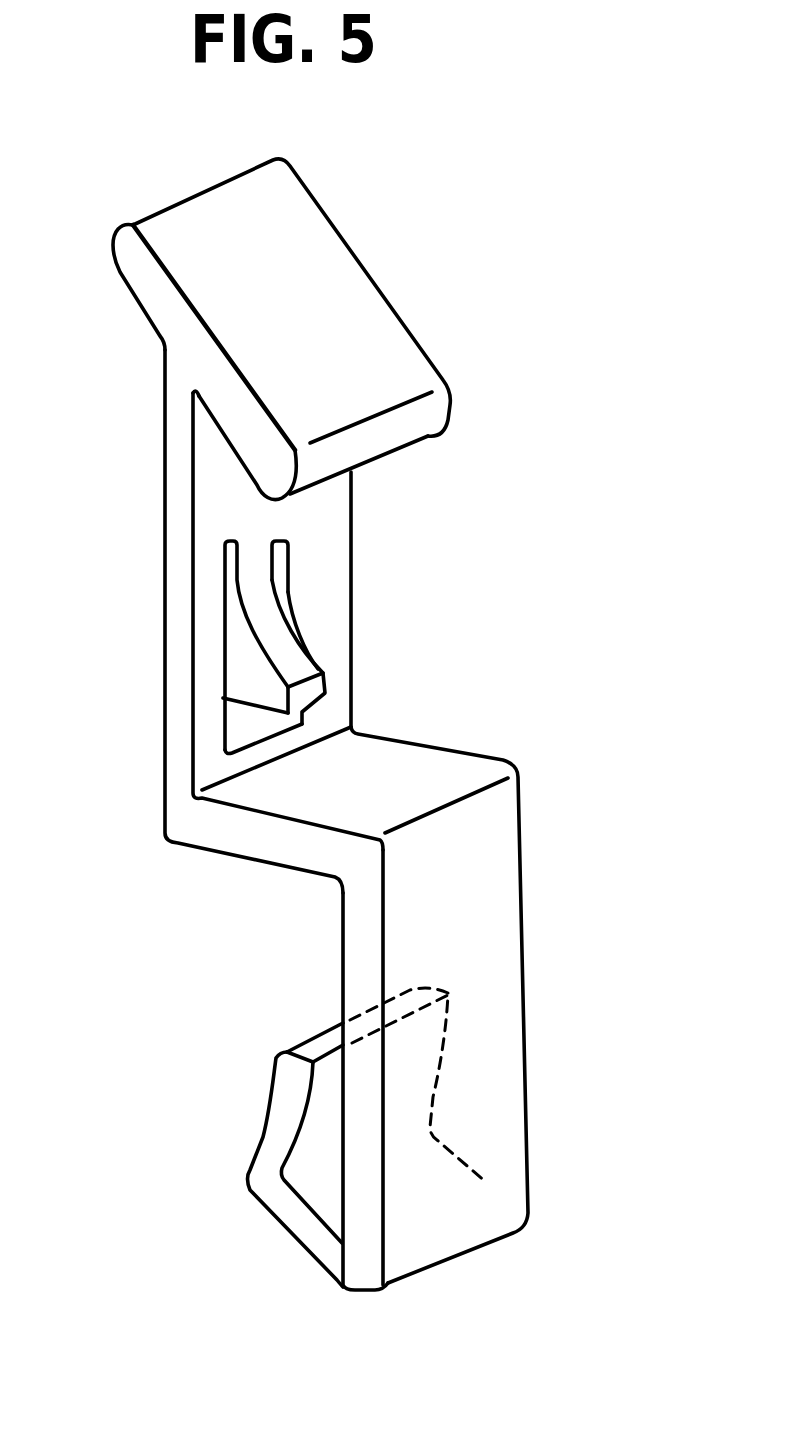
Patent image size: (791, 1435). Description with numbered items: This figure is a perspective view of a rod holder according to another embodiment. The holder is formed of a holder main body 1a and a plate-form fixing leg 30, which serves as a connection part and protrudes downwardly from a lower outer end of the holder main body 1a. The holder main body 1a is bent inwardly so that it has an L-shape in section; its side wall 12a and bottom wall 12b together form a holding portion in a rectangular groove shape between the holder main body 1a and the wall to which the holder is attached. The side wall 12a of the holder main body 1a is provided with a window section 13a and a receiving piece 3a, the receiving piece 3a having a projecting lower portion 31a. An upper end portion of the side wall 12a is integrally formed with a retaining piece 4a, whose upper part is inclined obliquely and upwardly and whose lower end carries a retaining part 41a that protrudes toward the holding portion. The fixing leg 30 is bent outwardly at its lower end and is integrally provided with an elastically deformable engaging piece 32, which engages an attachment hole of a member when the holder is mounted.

The holder main body 1a is at (152, 441).
The retaining piece 4a is at (343, 280).
The retaining part 41a is at (413, 423).
The side wall 12a is at (180, 612).
The receiving piece 3a is at (248, 658).
The projecting lower portion 31a is at (292, 655).
The window section 13a is at (243, 727).
The bottom wall 12b is at (422, 765).
The fixing leg 30 is at (358, 955).
The engaging piece 32 is at (283, 1132).